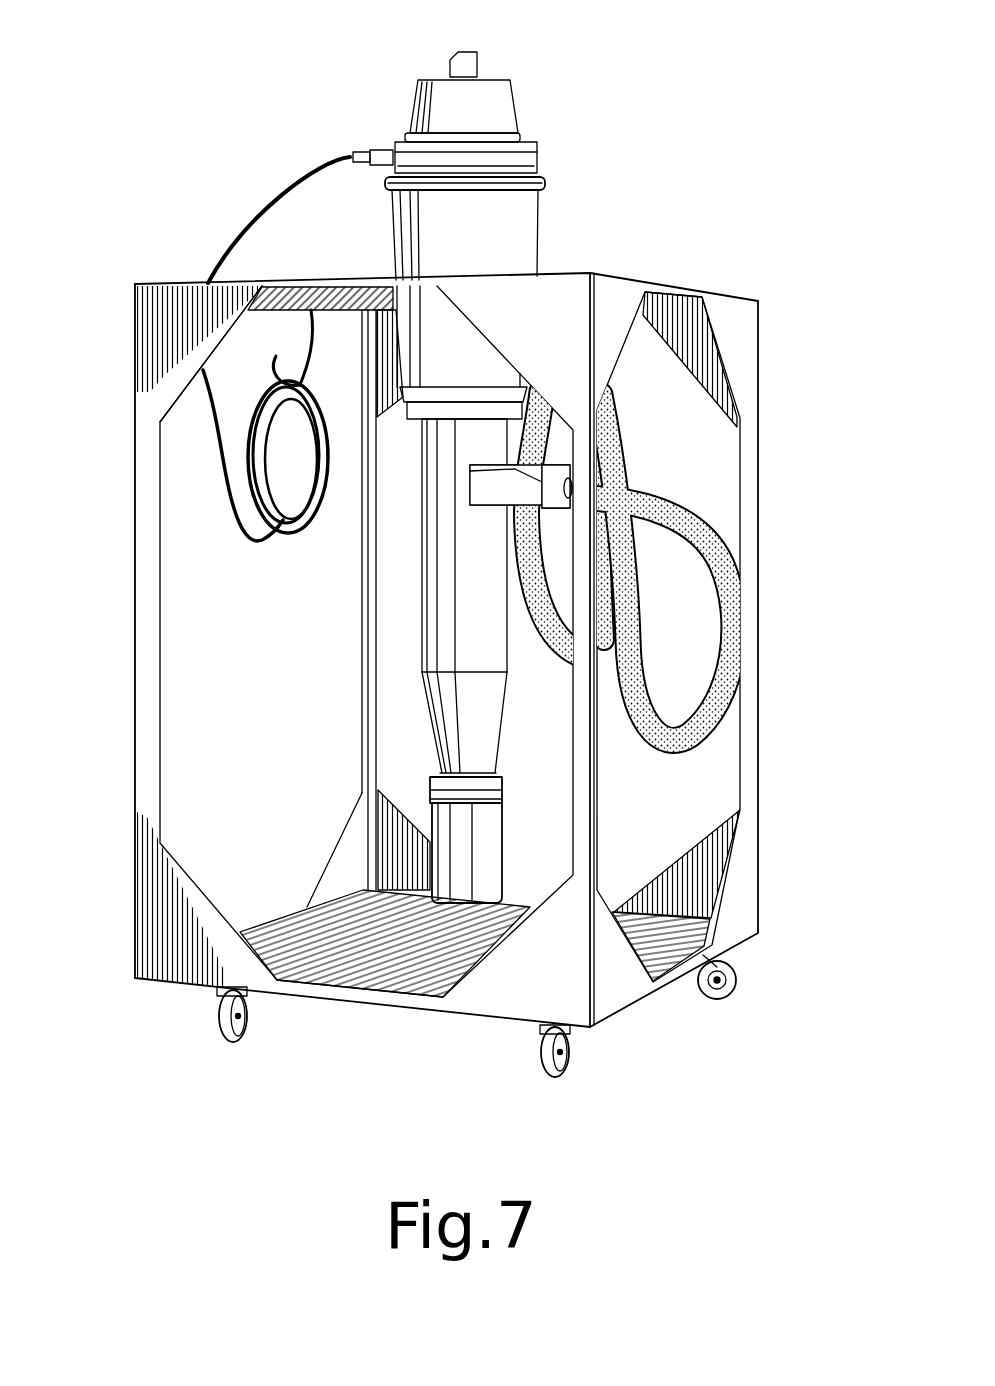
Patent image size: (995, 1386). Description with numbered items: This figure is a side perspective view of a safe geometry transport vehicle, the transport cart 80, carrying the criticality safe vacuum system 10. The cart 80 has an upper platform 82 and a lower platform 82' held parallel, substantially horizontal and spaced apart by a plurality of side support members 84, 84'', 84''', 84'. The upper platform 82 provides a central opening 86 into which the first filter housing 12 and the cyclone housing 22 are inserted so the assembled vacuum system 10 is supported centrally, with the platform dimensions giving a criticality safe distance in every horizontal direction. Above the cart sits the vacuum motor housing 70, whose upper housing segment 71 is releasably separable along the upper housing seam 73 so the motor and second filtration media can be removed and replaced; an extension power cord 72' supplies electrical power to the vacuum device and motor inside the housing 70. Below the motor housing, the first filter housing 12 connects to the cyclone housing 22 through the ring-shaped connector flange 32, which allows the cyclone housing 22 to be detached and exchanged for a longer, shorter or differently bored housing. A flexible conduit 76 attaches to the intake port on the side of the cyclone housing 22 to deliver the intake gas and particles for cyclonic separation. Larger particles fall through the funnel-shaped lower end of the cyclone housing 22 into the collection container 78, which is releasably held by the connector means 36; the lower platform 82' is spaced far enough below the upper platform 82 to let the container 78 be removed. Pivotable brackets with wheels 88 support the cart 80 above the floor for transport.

The vacuum system 10 is at (557, 60).
The first filter housing 12 is at (475, 368).
The cyclone housing 22 is at (422, 548).
The connector flange 32 is at (405, 413).
The connector means 36 is at (430, 786).
The vacuum motor housing 70 is at (412, 107).
The upper housing segment 71 is at (475, 246).
The extension power cord 72' is at (263, 220).
The upper housing seam 73 is at (540, 177).
The conduit 76 is at (680, 505).
The collection container 78 is at (503, 827).
The transport cart 80 is at (812, 230).
The upper platform 82 is at (662, 615).
The lower platform 82' is at (475, 981).
The side support member 84 is at (727, 650).
The side support member 84' is at (667, 649).
The side support member 84'' is at (362, 655).
The side support member 84''' is at (399, 641).
The central opening 86 is at (553, 262).
The wheel 88 is at (210, 1017).